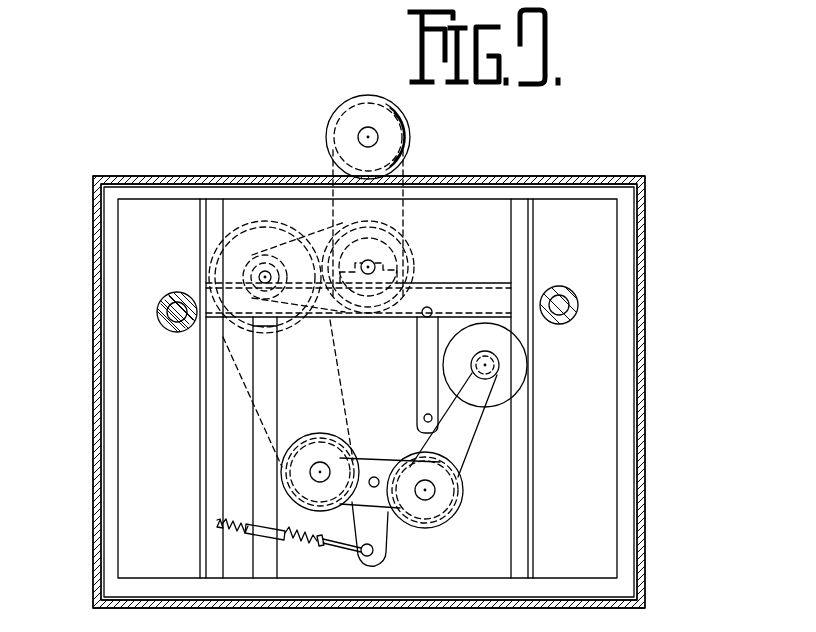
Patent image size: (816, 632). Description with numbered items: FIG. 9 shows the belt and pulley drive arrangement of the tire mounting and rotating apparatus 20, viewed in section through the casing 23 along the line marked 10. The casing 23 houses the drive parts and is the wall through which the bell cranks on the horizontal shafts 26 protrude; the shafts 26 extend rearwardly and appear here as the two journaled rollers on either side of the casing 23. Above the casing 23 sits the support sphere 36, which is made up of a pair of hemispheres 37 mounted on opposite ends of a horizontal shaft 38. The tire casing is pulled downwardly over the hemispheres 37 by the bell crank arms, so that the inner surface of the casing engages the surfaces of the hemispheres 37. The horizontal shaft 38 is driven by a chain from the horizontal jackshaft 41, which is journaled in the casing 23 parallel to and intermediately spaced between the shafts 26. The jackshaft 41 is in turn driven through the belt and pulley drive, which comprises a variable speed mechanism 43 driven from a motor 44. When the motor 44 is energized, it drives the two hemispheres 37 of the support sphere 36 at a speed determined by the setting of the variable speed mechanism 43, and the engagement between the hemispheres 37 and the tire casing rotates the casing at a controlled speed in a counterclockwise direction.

The section line 10- 10 is at (352, 349).
The tire mounting and rotating apparatus 20 is at (652, 540).
The casing 23 is at (93, 407).
The horizontal shafts 26 is at (160, 312).
The support sphere 36 is at (315, 143).
The hemispheres 37 is at (404, 152).
The horizontal shaft 38 is at (378, 140).
The horizontal jackshaft 41 is at (378, 263).
The variable speed mechanism 43 is at (409, 530).
The motor 44 is at (487, 408).